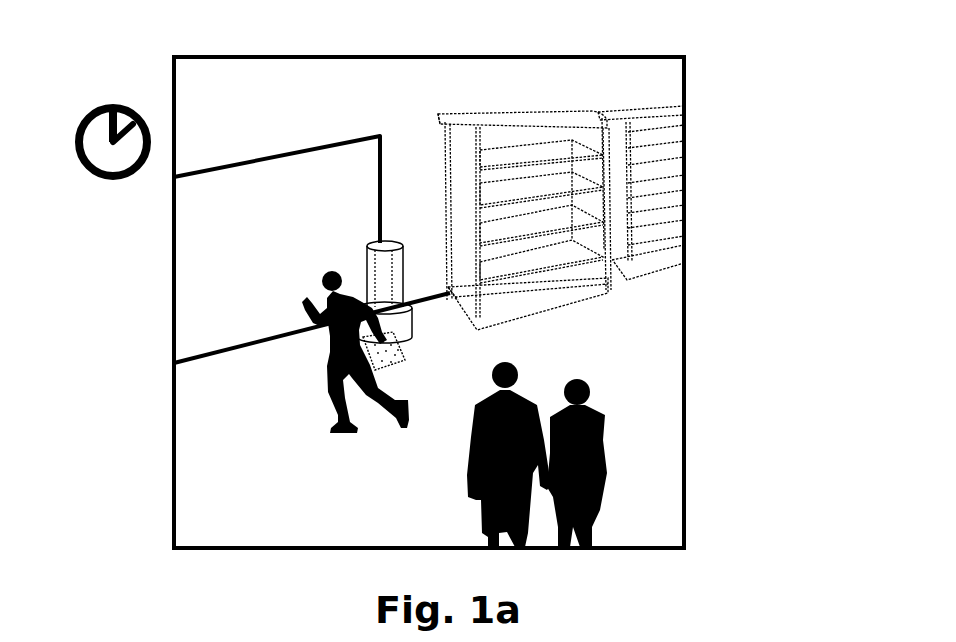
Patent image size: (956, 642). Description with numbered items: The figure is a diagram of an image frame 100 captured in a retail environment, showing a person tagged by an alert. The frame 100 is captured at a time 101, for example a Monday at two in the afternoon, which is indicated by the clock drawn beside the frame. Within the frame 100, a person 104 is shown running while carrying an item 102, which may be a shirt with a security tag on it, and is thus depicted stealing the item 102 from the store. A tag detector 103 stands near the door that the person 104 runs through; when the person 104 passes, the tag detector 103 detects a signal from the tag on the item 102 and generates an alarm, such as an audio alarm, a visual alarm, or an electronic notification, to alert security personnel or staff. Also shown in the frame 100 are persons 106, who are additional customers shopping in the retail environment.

The image frame 100 is at (402, 20).
The time 101 is at (112, 178).
The item 102 is at (400, 347).
The tag detector 103 is at (383, 293).
The person 104 is at (325, 282).
The persons 106 is at (607, 482).